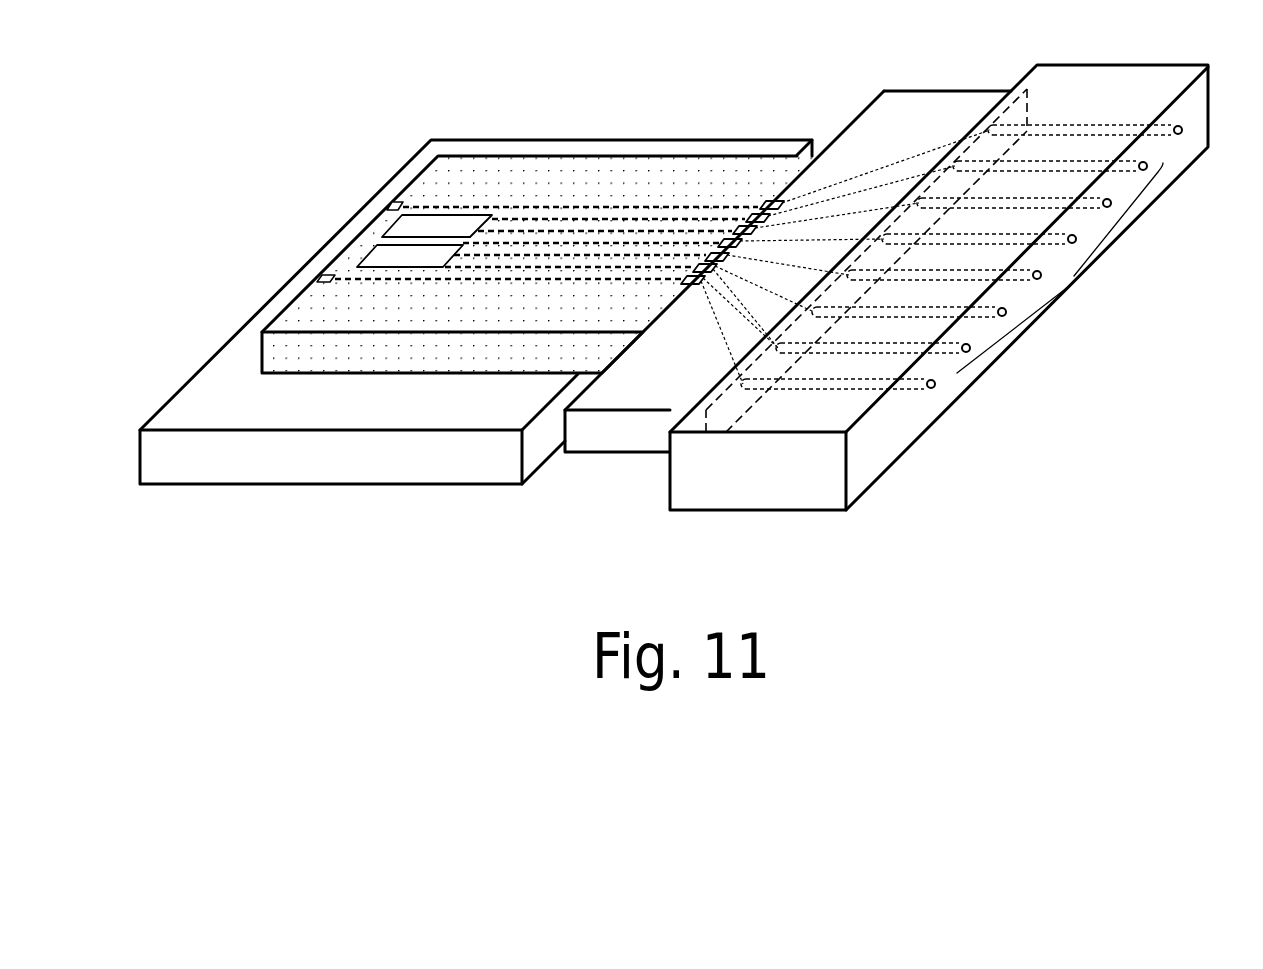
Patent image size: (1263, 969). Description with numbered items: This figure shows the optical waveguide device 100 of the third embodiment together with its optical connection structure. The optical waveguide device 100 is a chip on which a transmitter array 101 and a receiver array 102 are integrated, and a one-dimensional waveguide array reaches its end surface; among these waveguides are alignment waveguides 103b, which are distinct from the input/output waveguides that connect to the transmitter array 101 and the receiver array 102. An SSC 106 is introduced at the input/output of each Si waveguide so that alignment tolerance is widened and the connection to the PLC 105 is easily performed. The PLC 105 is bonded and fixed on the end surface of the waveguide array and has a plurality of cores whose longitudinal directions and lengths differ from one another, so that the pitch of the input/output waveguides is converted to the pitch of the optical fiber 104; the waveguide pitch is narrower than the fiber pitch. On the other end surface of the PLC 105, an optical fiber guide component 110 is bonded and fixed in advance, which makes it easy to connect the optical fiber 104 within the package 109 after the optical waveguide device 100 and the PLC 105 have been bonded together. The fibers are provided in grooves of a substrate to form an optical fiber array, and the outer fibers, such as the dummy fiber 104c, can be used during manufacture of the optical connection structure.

The optical waveguide device 100 is at (657, 170).
The transmitter array 101 is at (377, 254).
The receiver array 102 is at (413, 228).
The alignment waveguide 103b is at (580, 278).
The optical fiber 104 is at (1066, 282).
The dummy fiber 104c is at (1181, 135).
The PLC 105 is at (618, 442).
The SSC 106 is at (770, 197).
The package 109 is at (434, 468).
The optical fiber guide component 110 is at (762, 485).